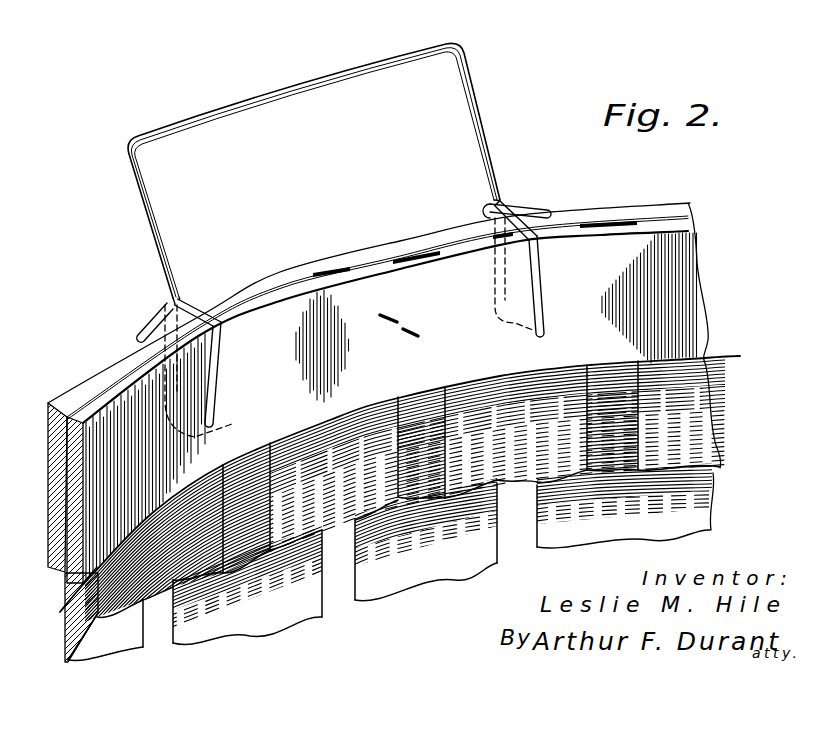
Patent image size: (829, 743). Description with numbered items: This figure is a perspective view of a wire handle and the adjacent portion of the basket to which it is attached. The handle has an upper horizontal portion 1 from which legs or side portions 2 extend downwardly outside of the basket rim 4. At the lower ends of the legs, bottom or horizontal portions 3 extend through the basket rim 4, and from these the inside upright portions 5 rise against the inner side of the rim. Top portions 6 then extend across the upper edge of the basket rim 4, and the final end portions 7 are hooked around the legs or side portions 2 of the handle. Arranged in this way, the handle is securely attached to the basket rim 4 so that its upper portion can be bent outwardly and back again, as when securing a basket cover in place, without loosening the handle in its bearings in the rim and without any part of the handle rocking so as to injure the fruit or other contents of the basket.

The upper horizontal portion 1 is at (235, 104).
The legs or side portions 2 is at (149, 210).
The bottom or horizontal portions 3 is at (513, 320).
The basket rim 4 is at (112, 380).
The inside upright portions 5 is at (216, 368).
The top portions 6 is at (193, 308).
The final end portions 7 is at (153, 320).